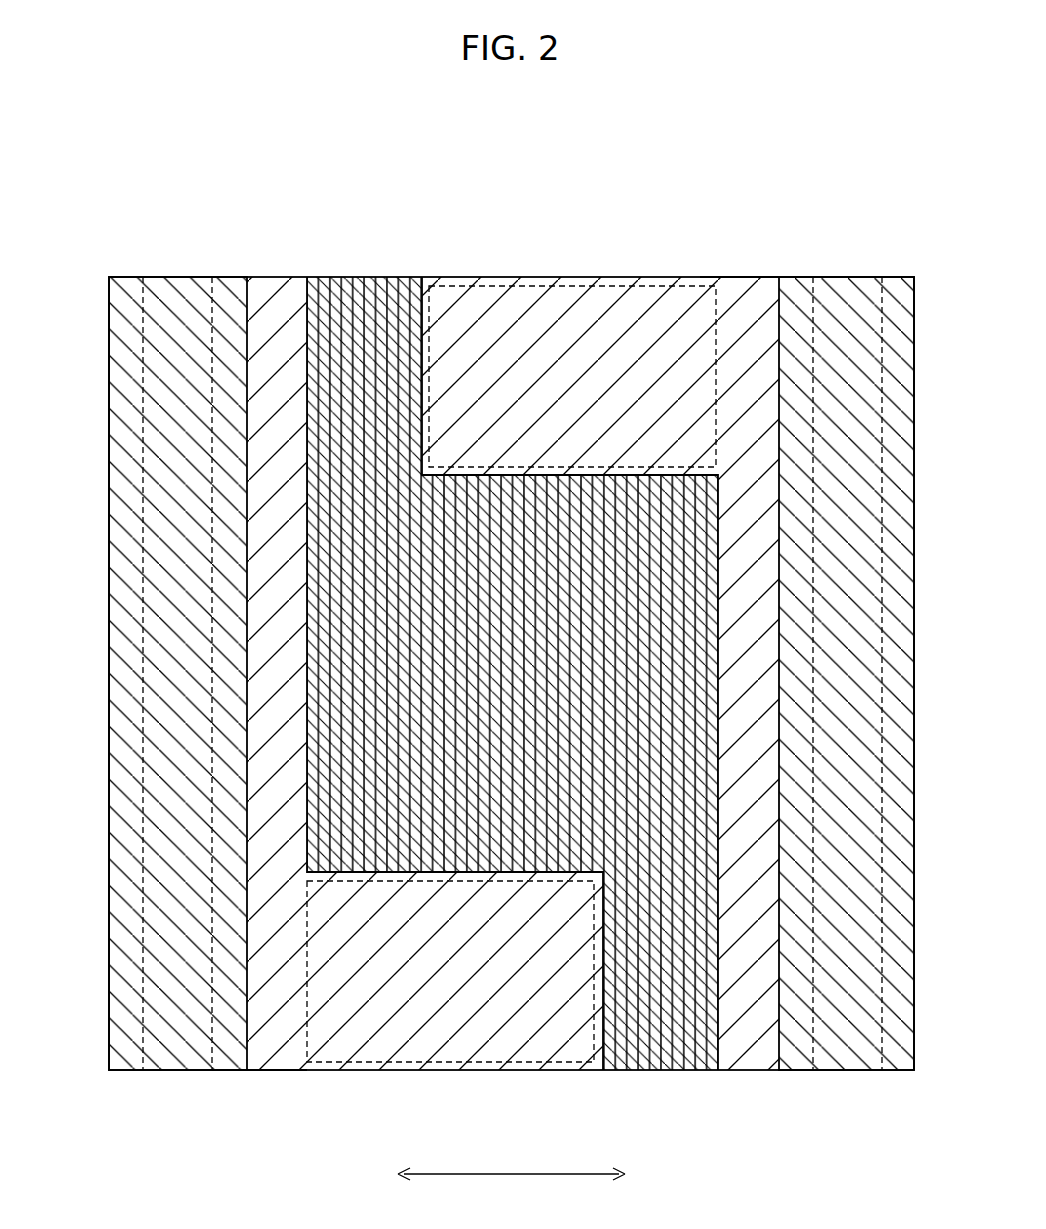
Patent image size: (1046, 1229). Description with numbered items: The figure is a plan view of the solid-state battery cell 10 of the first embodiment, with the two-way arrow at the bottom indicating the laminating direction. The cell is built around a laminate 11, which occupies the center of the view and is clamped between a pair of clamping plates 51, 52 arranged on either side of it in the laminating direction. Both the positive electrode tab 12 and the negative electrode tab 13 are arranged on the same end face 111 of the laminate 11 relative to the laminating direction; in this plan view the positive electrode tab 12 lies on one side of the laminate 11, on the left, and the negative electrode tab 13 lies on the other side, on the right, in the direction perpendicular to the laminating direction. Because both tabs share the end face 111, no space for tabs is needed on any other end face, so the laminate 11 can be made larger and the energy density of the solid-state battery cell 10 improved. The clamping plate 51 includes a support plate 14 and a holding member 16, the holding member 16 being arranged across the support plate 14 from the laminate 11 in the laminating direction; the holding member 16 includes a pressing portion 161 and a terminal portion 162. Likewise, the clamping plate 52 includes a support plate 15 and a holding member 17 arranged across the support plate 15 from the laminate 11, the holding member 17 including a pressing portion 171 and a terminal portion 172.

The solid-state battery cell 10 is at (890, 142).
The laminate 11 is at (405, 262).
The end face 111 is at (358, 280).
The positive electrode tab 12 is at (382, 1066).
The negative electrode tab 13 is at (545, 285).
The support plate 14 is at (492, 1064).
The support plate 15 is at (658, 295).
The holding member 16 is at (98, 340).
The pressing portion 161 is at (228, 292).
The terminal portion 162 is at (158, 282).
The holding member 17 is at (922, 340).
The pressing portion 171 is at (795, 280).
The terminal portion 172 is at (862, 280).
The clamping plate 51 is at (246, 1090).
The clamping plate 52 is at (736, 248).